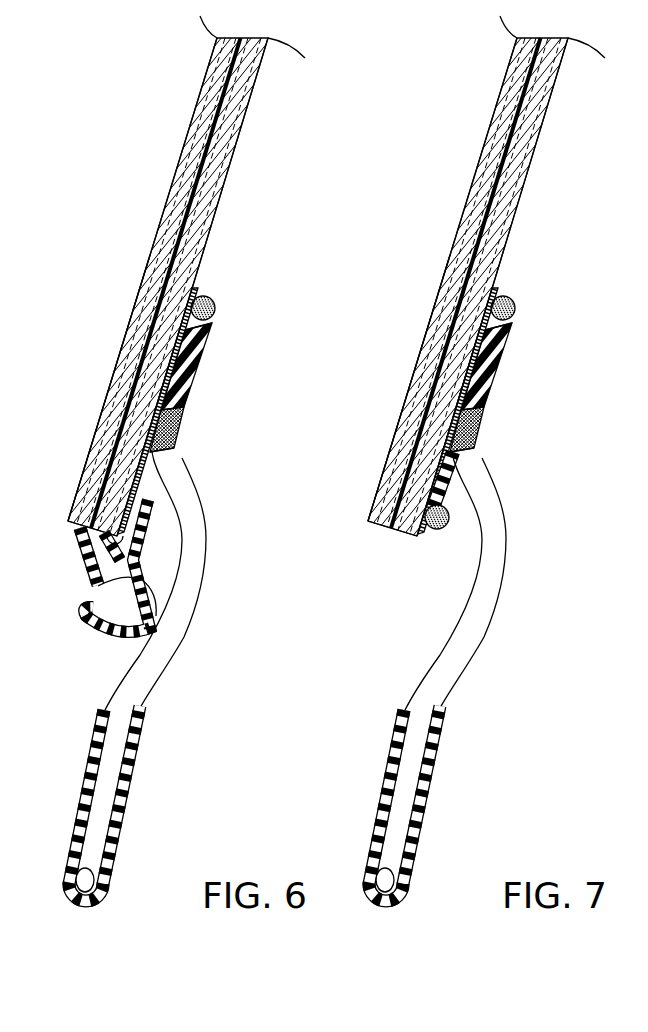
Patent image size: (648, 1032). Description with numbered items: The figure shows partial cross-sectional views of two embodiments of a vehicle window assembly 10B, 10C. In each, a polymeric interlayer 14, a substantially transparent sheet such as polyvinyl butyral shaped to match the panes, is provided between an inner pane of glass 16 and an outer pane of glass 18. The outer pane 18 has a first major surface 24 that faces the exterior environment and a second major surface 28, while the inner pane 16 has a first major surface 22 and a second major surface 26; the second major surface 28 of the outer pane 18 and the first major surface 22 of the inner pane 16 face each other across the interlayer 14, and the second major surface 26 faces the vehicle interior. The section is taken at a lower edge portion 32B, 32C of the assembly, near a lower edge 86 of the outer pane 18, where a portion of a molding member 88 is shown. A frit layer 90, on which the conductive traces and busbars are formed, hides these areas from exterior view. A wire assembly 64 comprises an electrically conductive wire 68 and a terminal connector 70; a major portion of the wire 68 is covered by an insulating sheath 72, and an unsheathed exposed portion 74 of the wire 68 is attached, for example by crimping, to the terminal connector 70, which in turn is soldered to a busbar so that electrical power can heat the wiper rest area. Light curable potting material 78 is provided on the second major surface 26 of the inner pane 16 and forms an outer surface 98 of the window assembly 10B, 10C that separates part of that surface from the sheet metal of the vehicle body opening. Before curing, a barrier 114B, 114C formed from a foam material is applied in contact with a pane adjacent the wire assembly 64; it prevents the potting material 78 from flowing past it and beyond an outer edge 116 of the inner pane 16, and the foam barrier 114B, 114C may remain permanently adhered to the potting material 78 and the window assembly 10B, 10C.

In FIG. 6, the window assembly 10B is at (92, 86).
In FIG. 7, the window assembly 10C is at (363, 78).
In FIG. 6, the polymeric interlayer 14 is at (190, 208).
In FIG. 7, the polymeric interlayer 14 is at (190, 208).
In FIG. 6, the inner pane of glass 16 is at (243, 122).
In FIG. 7, the inner pane of glass 16 is at (509, 287).
In FIG. 6, the outer pane of glass 18 is at (184, 145).
In FIG. 7, the outer pane of glass 18 is at (442, 279).
In FIG. 6, the first major surface of the inner pane 22 is at (233, 67).
In FIG. 7, the first major surface of the inner pane 22 is at (499, 283).
In FIG. 6, the first major surface of the outer pane 24 is at (210, 60).
In FIG. 7, the first major surface of the outer pane 24 is at (451, 275).
In FIG. 6, the second major surface of the inner pane 26 is at (254, 89).
In FIG. 7, the second major surface of the inner pane 26 is at (506, 284).
In FIG. 6, the second major surface of the outer pane 28 is at (213, 112).
In FIG. 7, the second major surface of the outer pane 28 is at (461, 282).
In FIG. 6, the lower edge portion 32B is at (146, 268).
In FIG. 7, the blade distal portion 32C is at (409, 379).
In FIG. 6, the wire assembly 64 is at (165, 468).
In FIG. 7, the wire assembly 64 is at (511, 496).
In FIG. 6, the electrically conductive wire 68 is at (183, 414).
In FIG. 7, the electrically conductive wire 68 is at (476, 421).
In FIG. 6, the terminal connector 70 is at (180, 440).
In FIG. 7, the terminal connector 70 is at (506, 429).
In FIG. 6, the insulating sheath 72 is at (177, 672).
In FIG. 7, the insulating sheath 72 is at (470, 676).
In FIG. 6, the exposed portion of the conductive wire 74 is at (147, 425).
In FIG. 7, the exposed portion of the conductive wire 74 is at (404, 409).
In FIG. 6, the potting material 78 is at (204, 358).
In FIG. 7, the potting material 78 is at (492, 367).
In FIG. 6, the lower edge of the outer pane 86 is at (70, 523).
In FIG. 7, the lower edge of the outer pane 86 is at (361, 515).
In FIG. 6, the molding member 88 is at (103, 636).
In FIG. 6, the frit layer 90 is at (197, 291).
In FIG. 7, the frit layer 90 is at (494, 395).
In FIG. 6, the outer surface of the window assembly 98 is at (208, 328).
In FIG. 7, the outer surface of the window assembly 98 is at (545, 316).
In FIG. 6, the barrier 114B is at (214, 304).
In FIG. 7, the barrier 114C is at (511, 405).
In FIG. 6, the outer edge of the inner pane 116 is at (73, 582).
In FIG. 7, the outer edge of the inner pane 116 is at (363, 587).